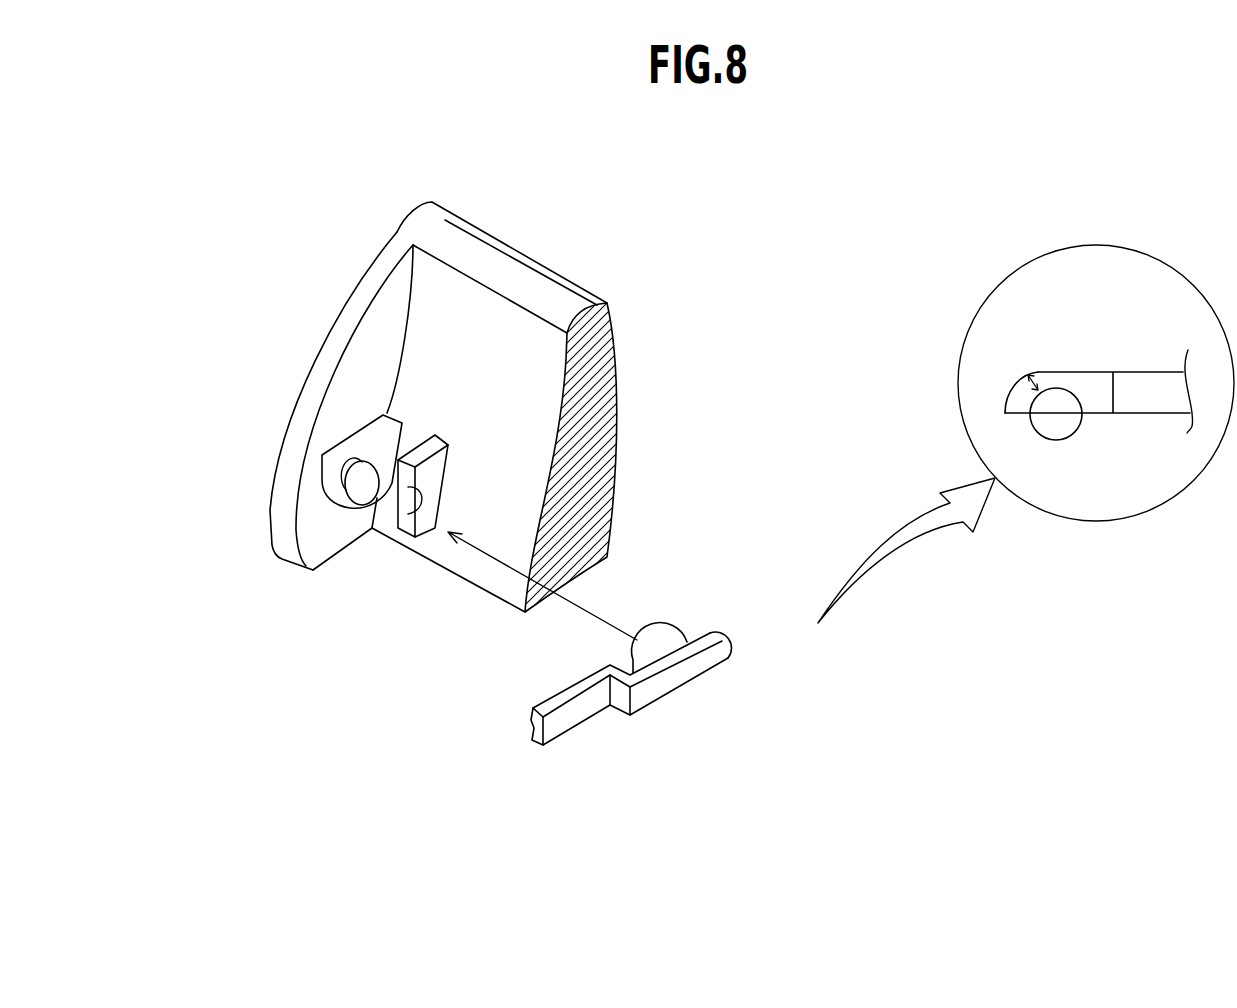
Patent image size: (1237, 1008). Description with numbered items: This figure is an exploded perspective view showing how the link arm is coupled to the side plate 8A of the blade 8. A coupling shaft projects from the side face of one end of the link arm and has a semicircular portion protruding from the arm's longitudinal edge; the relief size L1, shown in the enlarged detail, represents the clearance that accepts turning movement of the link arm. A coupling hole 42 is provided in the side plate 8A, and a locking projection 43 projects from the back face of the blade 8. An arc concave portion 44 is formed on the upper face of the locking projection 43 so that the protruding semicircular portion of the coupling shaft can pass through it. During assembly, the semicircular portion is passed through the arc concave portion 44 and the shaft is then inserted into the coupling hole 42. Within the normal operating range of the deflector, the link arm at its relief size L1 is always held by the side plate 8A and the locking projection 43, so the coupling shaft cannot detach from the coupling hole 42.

The blade 8 is at (603, 367).
The side plate 8A is at (377, 358).
The coupling hole 42 is at (352, 475).
The locking projection 43 is at (420, 520).
The arc concave portion 44 is at (373, 500).
The relief size L1 is at (1040, 372).